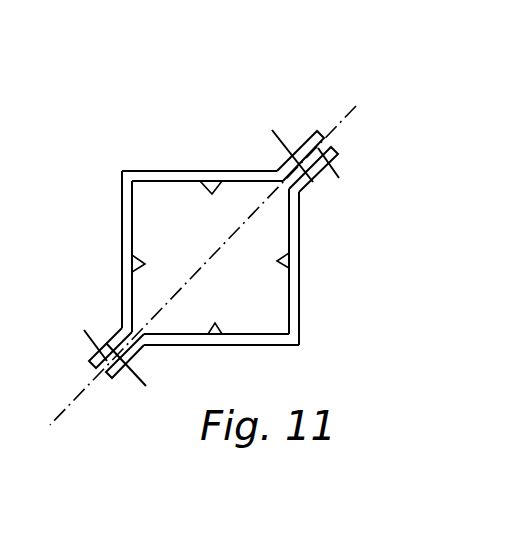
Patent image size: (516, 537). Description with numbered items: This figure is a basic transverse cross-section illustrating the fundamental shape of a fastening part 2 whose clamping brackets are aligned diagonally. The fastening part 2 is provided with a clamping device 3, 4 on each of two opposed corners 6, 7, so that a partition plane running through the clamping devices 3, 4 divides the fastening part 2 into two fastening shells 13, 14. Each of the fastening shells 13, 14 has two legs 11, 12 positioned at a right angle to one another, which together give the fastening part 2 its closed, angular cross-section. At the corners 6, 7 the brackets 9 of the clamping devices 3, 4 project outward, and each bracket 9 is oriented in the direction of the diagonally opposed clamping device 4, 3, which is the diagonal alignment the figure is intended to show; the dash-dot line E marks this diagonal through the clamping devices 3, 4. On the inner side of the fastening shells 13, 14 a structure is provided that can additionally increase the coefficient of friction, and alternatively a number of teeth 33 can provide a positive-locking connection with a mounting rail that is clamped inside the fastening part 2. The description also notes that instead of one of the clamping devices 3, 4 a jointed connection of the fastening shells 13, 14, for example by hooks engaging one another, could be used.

The fastening part 2 is at (191, 102).
The clamping device 3 is at (294, 130).
The clamping device 4 is at (129, 386).
The corner 6 is at (303, 190).
The corner 7 is at (121, 331).
The bracket 9 is at (331, 155).
The leg 11 is at (122, 240).
The leg 12 is at (237, 171).
The fastening shell 13 is at (150, 171).
The fastening shell 14 is at (299, 316).
The teeth 33 is at (287, 262).
The plane E is at (380, 82).